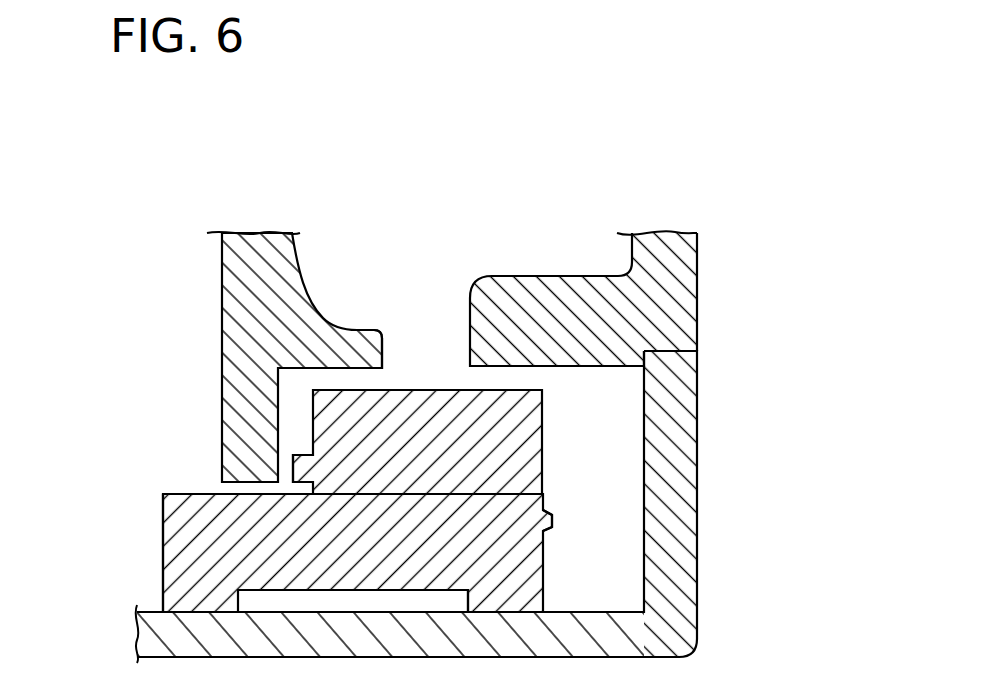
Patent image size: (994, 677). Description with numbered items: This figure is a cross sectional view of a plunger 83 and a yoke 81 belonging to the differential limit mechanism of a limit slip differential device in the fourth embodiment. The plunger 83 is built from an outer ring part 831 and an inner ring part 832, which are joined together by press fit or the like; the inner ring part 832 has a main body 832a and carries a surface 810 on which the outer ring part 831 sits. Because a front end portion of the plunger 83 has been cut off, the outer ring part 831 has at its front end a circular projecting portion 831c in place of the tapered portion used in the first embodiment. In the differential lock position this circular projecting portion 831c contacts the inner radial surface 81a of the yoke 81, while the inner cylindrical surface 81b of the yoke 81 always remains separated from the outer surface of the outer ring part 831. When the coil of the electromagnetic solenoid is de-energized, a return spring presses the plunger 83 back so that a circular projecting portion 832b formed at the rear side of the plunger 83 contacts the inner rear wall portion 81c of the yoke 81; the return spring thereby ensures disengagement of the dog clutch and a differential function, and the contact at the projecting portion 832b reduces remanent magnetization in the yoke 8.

The yoke 8 is at (216, 281).
The yoke 81 is at (703, 293).
The inner radial surface 81a is at (286, 387).
The inner cylindrical surface 81b is at (347, 371).
The inner rear wall portion 81c is at (650, 476).
The plunger 83 is at (157, 503).
The outer ring part 831 is at (503, 454).
The circular projecting portion 831c is at (300, 457).
The contact surface 810 is at (212, 496).
The inner ring part 832 is at (517, 590).
The base portion 832a is at (163, 577).
The circular projecting portion 832b is at (553, 519).